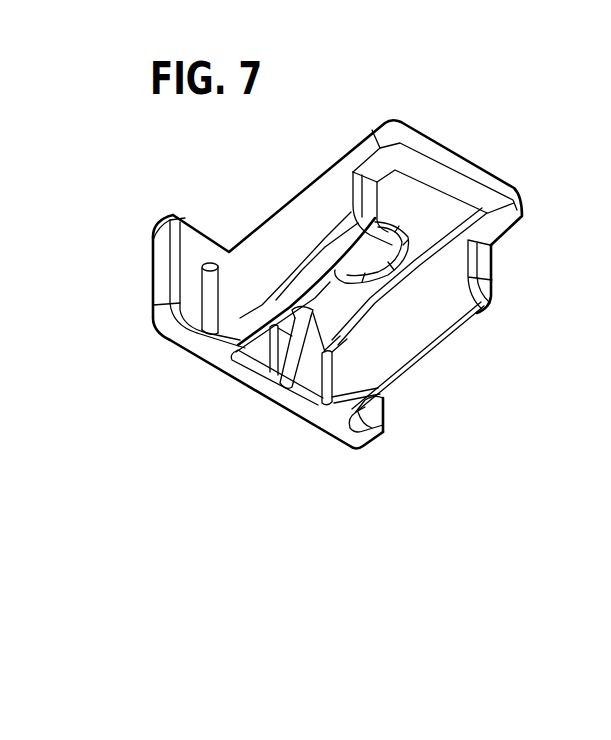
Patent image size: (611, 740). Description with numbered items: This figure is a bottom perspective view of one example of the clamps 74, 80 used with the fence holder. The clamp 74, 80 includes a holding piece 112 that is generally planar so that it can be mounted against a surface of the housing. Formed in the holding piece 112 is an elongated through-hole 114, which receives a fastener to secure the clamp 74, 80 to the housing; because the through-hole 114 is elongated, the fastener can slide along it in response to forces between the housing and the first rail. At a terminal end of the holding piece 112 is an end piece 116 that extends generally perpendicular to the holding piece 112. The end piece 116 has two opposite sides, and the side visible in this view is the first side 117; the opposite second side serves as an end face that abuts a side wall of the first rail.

The clamp 74 is at (353, 224).
The clamp 80 is at (495, 98).
The holding piece 112 is at (415, 128).
The elongated through-hole 114 is at (367, 263).
The end piece 116 is at (190, 232).
The first side 117 is at (215, 243).